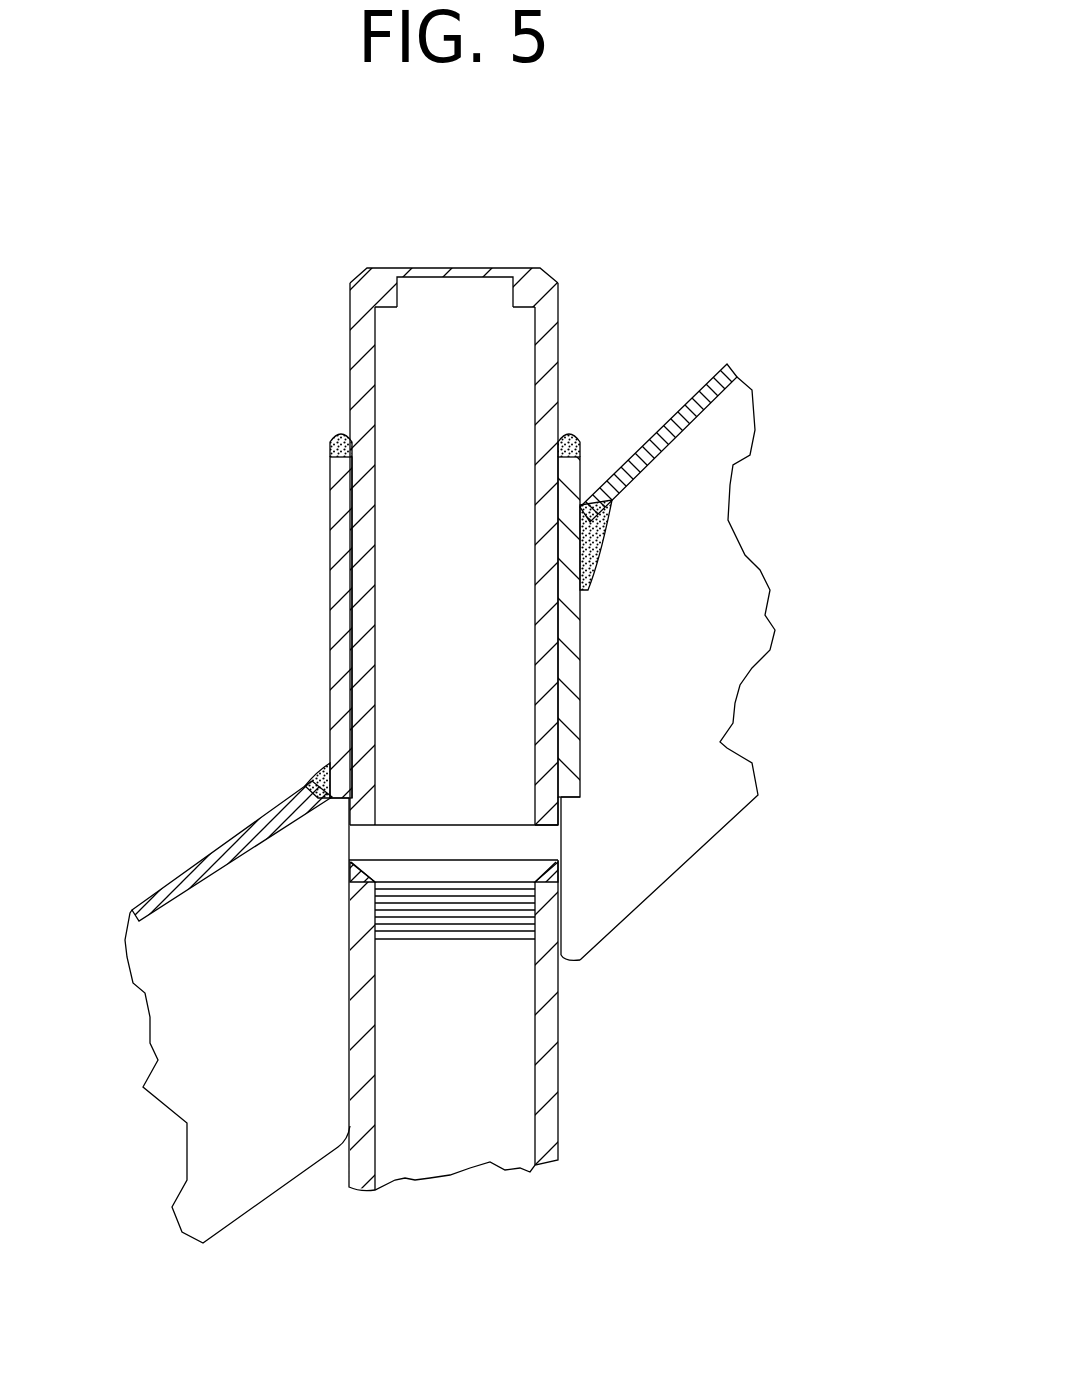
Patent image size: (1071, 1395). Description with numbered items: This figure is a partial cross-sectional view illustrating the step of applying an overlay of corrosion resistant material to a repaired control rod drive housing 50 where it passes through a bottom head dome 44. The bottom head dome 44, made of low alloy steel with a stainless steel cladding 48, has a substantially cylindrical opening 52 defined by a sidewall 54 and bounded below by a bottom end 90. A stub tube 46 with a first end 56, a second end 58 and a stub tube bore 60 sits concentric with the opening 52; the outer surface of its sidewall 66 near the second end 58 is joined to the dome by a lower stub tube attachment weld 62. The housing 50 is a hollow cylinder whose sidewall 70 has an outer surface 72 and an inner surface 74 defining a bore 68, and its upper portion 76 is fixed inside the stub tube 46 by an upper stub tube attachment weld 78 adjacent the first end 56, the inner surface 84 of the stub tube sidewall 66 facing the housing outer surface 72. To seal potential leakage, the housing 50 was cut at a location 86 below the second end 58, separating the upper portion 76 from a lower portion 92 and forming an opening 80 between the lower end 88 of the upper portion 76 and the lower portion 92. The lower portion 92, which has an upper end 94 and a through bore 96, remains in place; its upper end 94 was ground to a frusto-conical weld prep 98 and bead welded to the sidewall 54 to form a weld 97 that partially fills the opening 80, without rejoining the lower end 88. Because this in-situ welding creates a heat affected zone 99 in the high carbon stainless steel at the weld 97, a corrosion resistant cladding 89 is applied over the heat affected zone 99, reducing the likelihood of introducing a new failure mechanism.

The bottom head dome 44 is at (746, 828).
The stub tube 46 is at (331, 531).
The stainless steel cladding 48 is at (212, 845).
The control rod drive housing 50 is at (525, 225).
The bottom head dome opening 52 is at (580, 969).
The sidewall 54 is at (352, 848).
The first end 56 is at (586, 462).
The second end 58 is at (582, 736).
The stub tube bore 60 is at (360, 488).
The lower stub tube attachment weld 62 is at (604, 532).
The stub tube sidewall 66 is at (340, 626).
The bore 68 is at (512, 400).
The sidewall 70 is at (368, 278).
The outer surface 72 is at (350, 336).
The inner surface 74 is at (380, 360).
The upper portion 76 is at (570, 332).
The upper stub tube attachment weld 78 is at (348, 430).
The opening 80 is at (448, 830).
The inner surface 84 is at (362, 539).
The location 86 is at (568, 838).
The lower end 88 is at (548, 812).
The cladding 89 is at (448, 952).
The bottom end 90 is at (258, 1226).
The lower portion 92 is at (590, 1078).
The upper end 94 is at (550, 905).
The through bore 96 is at (517, 1082).
The weld 97 is at (544, 861).
The weld prep 98 is at (349, 873).
The heat affected zone 99 is at (340, 883).